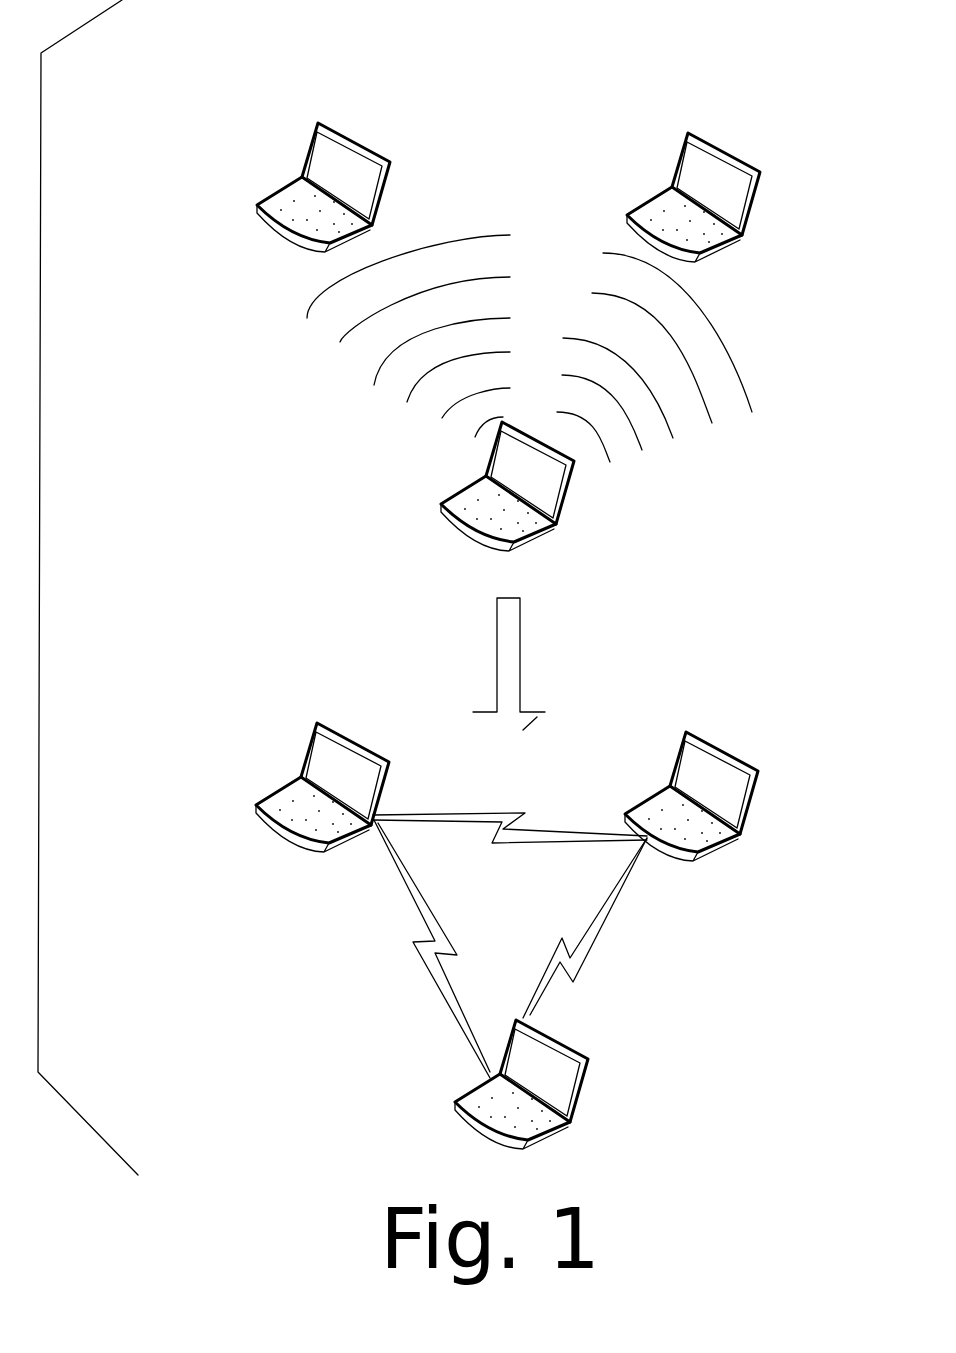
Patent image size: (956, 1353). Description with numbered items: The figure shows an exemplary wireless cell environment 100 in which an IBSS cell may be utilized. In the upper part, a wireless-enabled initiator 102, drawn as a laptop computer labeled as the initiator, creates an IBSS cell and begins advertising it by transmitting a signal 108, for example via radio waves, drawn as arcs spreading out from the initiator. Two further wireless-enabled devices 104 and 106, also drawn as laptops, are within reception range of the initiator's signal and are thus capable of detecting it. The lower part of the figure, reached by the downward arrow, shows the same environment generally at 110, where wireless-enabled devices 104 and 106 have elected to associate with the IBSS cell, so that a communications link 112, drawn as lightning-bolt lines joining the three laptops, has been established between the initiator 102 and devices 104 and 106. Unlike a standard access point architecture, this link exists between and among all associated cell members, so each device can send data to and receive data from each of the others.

The exemplary environment 100 is at (370, 44).
The wireless-enabled initiator 102 is at (440, 497).
The wireless-enabled device 104 is at (315, 121).
The wireless-enabled device 106 is at (685, 130).
The signal 108 is at (306, 310).
The environment after association 110 is at (370, 619).
The communications link 112 is at (568, 958).